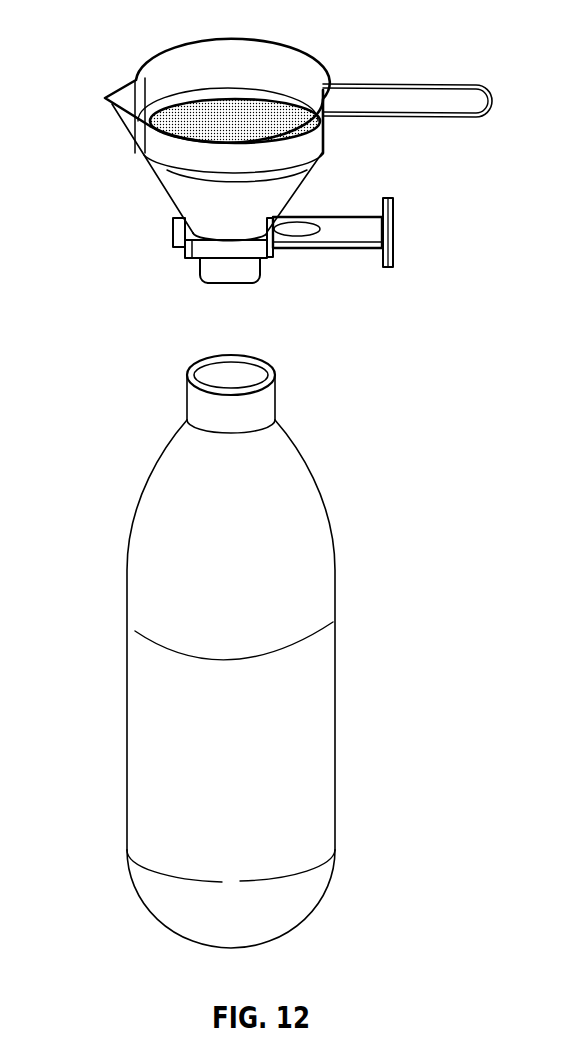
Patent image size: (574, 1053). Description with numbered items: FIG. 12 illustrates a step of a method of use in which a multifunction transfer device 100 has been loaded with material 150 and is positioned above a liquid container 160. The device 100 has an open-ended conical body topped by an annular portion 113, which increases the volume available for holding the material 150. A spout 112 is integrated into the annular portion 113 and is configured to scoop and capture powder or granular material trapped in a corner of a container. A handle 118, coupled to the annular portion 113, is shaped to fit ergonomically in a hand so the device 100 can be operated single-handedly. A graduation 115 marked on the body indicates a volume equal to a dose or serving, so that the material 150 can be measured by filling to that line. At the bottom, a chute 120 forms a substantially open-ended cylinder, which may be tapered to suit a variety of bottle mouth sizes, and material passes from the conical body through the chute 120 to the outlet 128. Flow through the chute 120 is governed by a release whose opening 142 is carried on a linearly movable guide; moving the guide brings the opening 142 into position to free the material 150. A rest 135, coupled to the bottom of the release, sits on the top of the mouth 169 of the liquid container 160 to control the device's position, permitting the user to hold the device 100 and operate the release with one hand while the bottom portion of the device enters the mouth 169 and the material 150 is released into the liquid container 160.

The multifunction transfer device 100 is at (112, 42).
The spout 112 is at (127, 86).
The annular portion 113 is at (136, 144).
The graduation 115 is at (325, 152).
The handle 118 is at (447, 88).
The chute 120 is at (262, 270).
The outlet opening 128 is at (231, 291).
The rest 135 is at (190, 262).
The opening 142 is at (312, 222).
The material 150 is at (234, 113).
The liquid container 160 is at (114, 430).
The mouth 169 is at (216, 379).